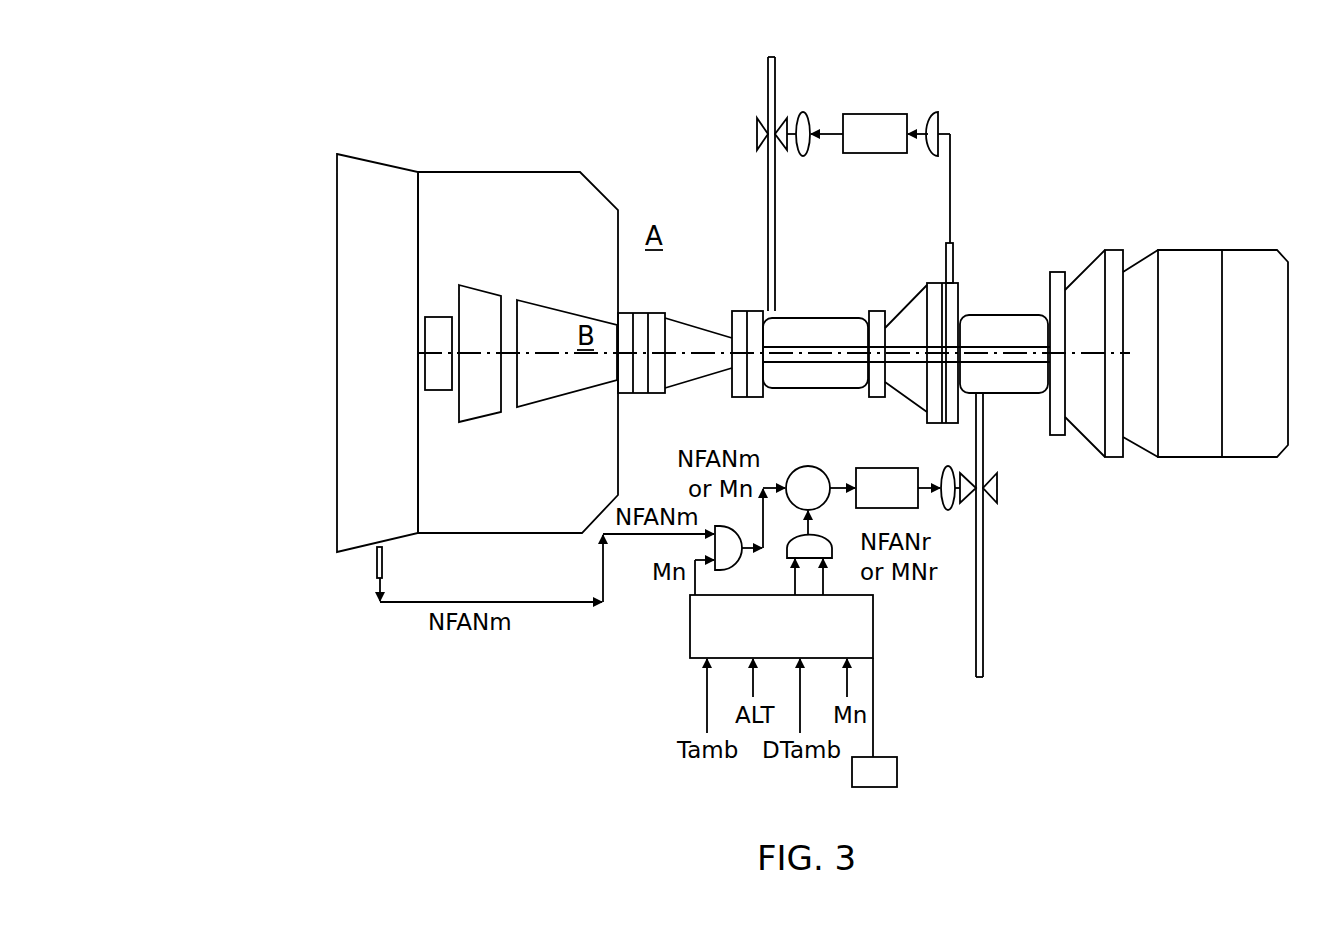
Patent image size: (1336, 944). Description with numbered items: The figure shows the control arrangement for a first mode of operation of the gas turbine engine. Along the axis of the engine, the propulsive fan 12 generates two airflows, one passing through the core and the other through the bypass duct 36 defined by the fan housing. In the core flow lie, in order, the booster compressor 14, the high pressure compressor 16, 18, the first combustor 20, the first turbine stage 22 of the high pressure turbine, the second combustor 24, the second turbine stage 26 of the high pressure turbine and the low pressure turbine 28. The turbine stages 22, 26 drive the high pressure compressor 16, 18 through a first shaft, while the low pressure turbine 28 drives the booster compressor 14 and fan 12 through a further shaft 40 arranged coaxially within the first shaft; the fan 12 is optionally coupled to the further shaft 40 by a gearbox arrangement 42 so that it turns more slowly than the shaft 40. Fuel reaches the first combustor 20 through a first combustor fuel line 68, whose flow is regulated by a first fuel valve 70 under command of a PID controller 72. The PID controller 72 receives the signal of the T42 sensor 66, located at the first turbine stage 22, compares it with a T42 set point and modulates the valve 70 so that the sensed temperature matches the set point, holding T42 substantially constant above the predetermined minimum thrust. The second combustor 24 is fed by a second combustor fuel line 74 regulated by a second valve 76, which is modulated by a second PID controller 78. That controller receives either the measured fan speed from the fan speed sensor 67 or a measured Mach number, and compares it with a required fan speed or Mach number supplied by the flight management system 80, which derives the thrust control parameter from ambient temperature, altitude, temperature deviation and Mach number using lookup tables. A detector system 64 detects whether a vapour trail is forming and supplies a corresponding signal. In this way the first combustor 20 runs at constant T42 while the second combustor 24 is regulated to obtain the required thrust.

The propulsive fan 12 is at (337, 245).
The booster compressor 14 is at (472, 285).
The high pressure compressor 16 is at (568, 314).
The high pressure compressor 18 is at (683, 320).
The first combustor 20 is at (795, 318).
The first turbine stage 22 is at (905, 305).
The second combustor 24 is at (995, 315).
The second turbine stage 26 is at (1089, 275).
The low pressure turbine 28 is at (1150, 250).
The bypass duct 36 is at (538, 255).
The further shaft 40 is at (538, 352).
The gearbox arrangement 42 is at (440, 392).
The detector system 64 is at (900, 770).
The T42 sensor 66 is at (953, 250).
The fan speed sensor 67 is at (384, 558).
The first combustor fuel line 68 is at (777, 85).
The first fuel valve 70 is at (757, 121).
The PID controller 72 is at (876, 114).
The second combustor fuel line 74 is at (985, 570).
The second valve 76 is at (998, 490).
The second PID controller 78 is at (882, 468).
The flight management system 80 is at (690, 630).